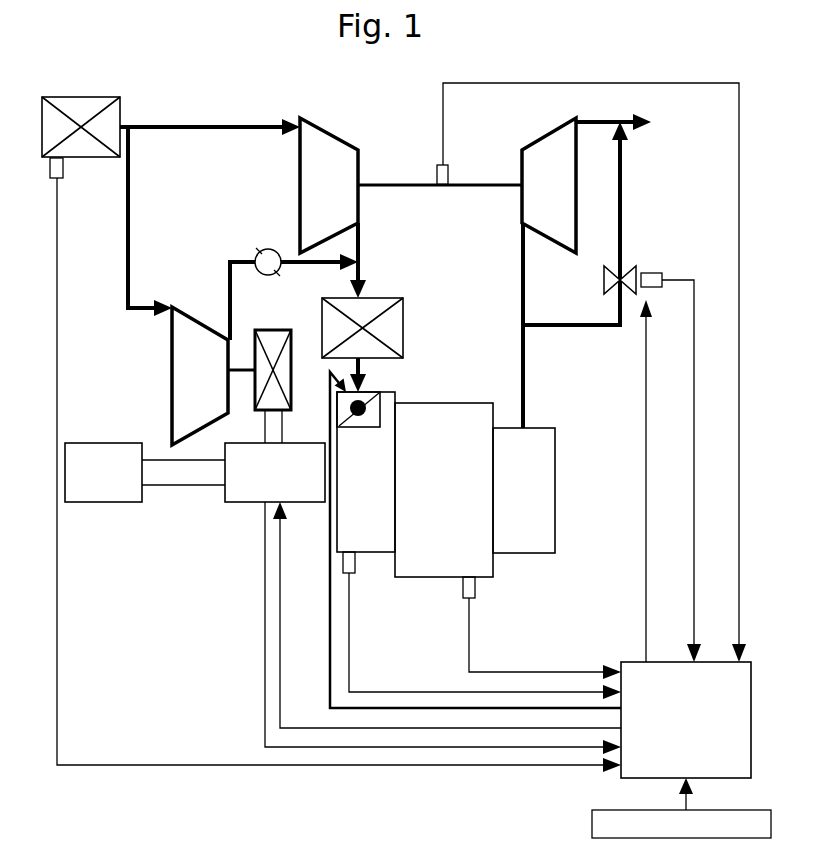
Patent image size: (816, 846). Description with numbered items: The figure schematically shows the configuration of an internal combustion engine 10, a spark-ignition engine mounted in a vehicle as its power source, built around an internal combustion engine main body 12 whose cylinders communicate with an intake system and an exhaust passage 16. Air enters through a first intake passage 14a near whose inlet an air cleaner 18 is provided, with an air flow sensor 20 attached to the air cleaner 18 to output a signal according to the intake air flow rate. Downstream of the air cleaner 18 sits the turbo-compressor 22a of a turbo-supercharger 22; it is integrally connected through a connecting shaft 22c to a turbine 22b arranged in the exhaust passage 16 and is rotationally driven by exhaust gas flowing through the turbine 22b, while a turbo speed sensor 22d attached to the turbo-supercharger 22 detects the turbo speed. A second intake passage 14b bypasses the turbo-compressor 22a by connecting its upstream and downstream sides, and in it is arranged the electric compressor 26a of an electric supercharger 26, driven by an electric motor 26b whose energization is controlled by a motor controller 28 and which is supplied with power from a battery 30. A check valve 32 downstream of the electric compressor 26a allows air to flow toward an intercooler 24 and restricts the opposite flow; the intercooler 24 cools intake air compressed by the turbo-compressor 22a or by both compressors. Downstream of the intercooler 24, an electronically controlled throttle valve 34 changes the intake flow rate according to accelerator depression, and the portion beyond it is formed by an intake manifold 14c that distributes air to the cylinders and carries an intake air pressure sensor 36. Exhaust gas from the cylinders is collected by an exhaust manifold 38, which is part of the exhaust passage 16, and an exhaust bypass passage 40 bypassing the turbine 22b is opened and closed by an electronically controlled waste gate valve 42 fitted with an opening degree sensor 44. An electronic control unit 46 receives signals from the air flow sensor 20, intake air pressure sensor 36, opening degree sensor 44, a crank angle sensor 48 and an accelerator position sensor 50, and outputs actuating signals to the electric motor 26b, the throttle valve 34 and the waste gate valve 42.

The internal combustion engine 10 is at (581, 406).
The internal combustion engine main body 12 is at (470, 403).
The first intake passage 14a is at (195, 126).
The second intake passage 14b is at (130, 262).
The intake manifold 14c is at (384, 553).
The exhaust passage 16 is at (526, 380).
The air cleaner 18 is at (93, 97).
The air flow sensor 20 is at (55, 182).
The turbo-supercharger 22 is at (523, 372).
The turbo-compressor 22a is at (340, 137).
The turbine 22b is at (530, 146).
The connecting shaft 22c is at (394, 184).
The turbo speed sensor 22d is at (448, 170).
The intercooler 24 is at (405, 316).
The electric supercharger 26 is at (218, 359).
The electric compressor 26a is at (190, 374).
The electric motor 26b is at (280, 328).
The motor controller 28 is at (238, 503).
The battery 30 is at (103, 503).
The check valve 32 is at (268, 249).
The throttle valve 34 is at (381, 395).
The intake air pressure sensor 36 is at (352, 575).
The exhaust manifold 38 is at (527, 554).
The exhaust bypass passage 40 is at (623, 195).
The waste gate valve 42 is at (636, 270).
The opening degree sensor 44 is at (662, 276).
The electronic control unit 46 is at (715, 660).
The crank angle sensor 48 is at (471, 600).
The accelerator position sensor 50 is at (592, 822).